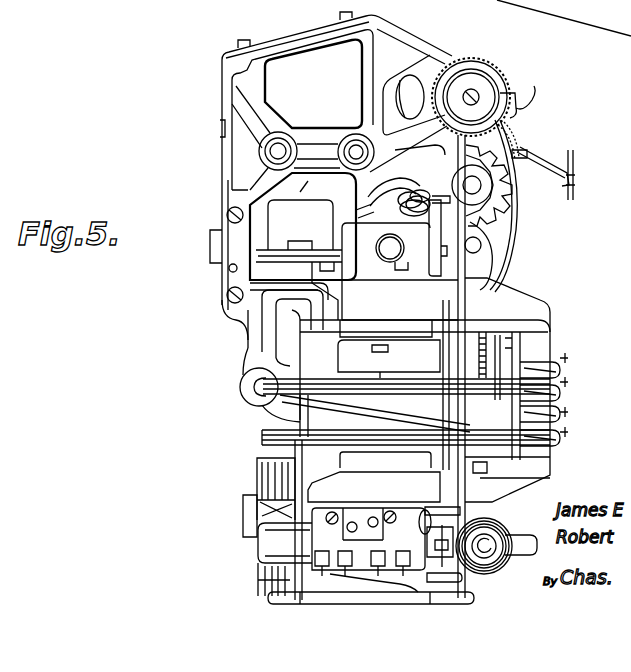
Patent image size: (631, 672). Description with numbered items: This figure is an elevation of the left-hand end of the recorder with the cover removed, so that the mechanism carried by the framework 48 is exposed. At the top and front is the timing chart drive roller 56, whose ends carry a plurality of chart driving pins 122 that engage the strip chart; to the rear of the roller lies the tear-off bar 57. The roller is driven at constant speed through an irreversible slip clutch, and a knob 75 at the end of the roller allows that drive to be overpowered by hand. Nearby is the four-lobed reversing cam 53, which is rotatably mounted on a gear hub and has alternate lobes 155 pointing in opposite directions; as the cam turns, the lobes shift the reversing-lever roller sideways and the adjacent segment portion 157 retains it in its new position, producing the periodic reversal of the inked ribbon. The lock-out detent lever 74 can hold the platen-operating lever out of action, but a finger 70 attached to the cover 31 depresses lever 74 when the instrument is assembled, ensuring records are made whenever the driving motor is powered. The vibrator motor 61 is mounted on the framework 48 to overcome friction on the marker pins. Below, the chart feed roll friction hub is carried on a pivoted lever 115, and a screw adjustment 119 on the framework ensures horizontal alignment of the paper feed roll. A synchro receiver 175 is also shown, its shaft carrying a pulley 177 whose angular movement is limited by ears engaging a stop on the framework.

The tear-off bar 57 is at (407, 33).
The chart driving pins 122 is at (483, 65).
The timing chart drive roller 56 is at (498, 86).
The knob 75 is at (505, 97).
The finger 70 is at (545, 160).
The lock-out detent lever 74 is at (520, 175).
The cover 31 is at (575, 191).
The reversing cam 53 is at (502, 190).
The lobes 155 is at (483, 213).
The segment portion 157 is at (480, 215).
The vibrator motor 61 is at (298, 207).
The synchro receiver 175 is at (362, 265).
The pulley 177 is at (250, 363).
The screw adjustment 119 is at (468, 517).
The lever 115 is at (507, 532).
The framework 48 is at (460, 586).